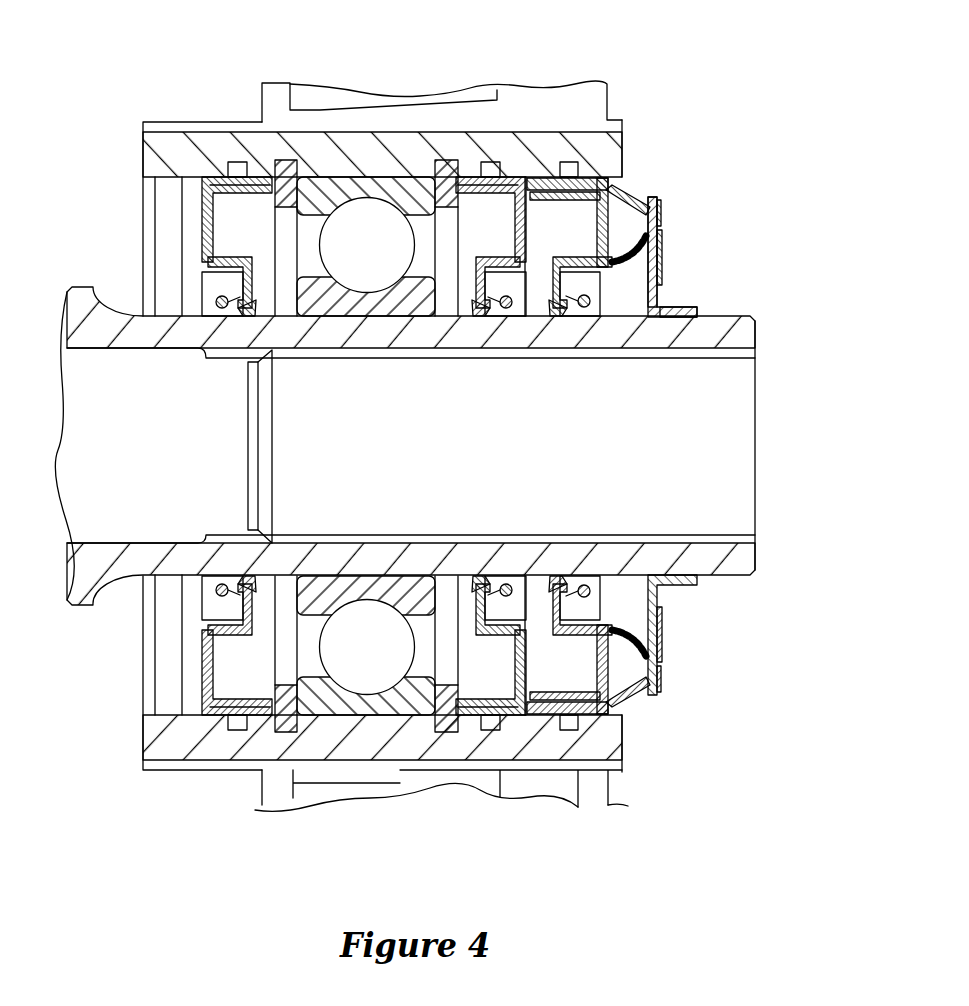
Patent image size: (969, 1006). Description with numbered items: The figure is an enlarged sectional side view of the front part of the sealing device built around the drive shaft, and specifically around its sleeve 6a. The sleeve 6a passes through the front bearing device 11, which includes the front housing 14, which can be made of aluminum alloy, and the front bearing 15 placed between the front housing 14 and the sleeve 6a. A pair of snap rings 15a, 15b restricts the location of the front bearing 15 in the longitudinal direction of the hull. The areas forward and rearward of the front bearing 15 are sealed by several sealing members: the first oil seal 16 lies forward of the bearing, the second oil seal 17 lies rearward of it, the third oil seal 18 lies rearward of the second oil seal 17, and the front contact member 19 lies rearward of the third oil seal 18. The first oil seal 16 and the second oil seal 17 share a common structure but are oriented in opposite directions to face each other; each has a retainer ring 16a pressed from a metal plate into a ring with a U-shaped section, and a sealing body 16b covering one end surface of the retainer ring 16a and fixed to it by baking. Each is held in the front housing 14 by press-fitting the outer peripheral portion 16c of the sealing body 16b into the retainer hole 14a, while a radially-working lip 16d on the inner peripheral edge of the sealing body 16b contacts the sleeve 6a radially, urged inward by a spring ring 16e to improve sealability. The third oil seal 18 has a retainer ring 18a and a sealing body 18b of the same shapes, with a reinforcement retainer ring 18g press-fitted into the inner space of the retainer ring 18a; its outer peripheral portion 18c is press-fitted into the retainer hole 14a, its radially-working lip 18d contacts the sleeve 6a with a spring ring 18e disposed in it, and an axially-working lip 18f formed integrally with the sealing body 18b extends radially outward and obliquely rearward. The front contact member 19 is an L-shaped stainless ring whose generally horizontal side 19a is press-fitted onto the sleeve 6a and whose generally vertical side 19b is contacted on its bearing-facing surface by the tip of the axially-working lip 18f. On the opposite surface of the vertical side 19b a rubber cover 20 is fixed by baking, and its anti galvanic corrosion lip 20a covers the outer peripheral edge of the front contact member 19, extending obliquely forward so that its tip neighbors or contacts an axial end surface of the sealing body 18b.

The sleeve 6a is at (737, 316).
The front bearing device 11 is at (433, 116).
The front housing 14 is at (385, 407).
The retainer hole 14a is at (230, 177).
The front bearing 15 is at (381, 380).
The snap ring 15a is at (288, 160).
The snap ring 15b is at (448, 160).
The first oil seal 16 is at (318, 382).
The retainer ring 16a is at (203, 213).
The sealing body 16b is at (203, 242).
The outer peripheral portion 16c is at (240, 176).
The radially-working lip 16d is at (243, 316).
The spring ring 16e is at (219, 316).
The second oil seal 17 is at (491, 168).
The third oil seal 18 is at (637, 366).
The retainer ring 18a is at (610, 192).
The sealing body 18b is at (600, 225).
The outer peripheral portion 18c is at (580, 175).
The radially-working lip 18d is at (565, 318).
The spring ring 18e is at (588, 318).
The axially-working lip 18f is at (616, 302).
The reinforcement retainer ring 18g is at (548, 177).
The front contact member 19 is at (708, 426).
The generally horizontal side 19a is at (678, 312).
The generally vertical side 19b is at (646, 240).
The cover 20 is at (694, 412).
The anti galvanic corrosion lip 20a is at (644, 207).